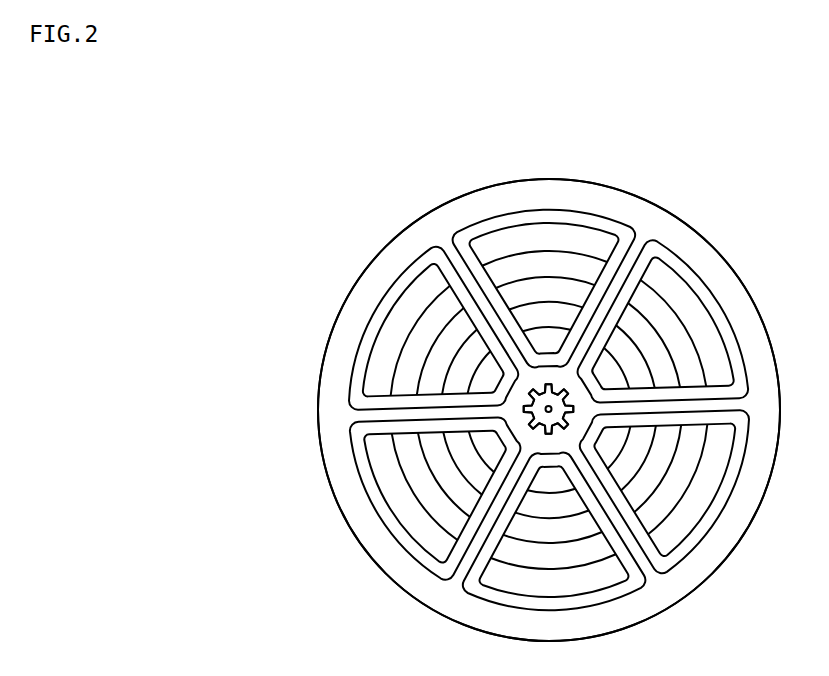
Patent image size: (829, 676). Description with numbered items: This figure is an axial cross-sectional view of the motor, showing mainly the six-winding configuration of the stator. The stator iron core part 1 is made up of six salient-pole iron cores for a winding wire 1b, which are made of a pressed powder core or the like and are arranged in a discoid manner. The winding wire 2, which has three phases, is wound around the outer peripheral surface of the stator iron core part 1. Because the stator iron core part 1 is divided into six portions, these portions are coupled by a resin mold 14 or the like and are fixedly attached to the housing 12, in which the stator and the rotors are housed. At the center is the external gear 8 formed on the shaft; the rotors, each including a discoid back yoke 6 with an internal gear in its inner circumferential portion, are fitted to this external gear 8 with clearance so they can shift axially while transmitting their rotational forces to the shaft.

The stator iron core part 1 is at (305, 118).
The salient-pole iron core for a winding wire 1b is at (428, 282).
The winding wire 2 is at (563, 215).
The back yoke 6 is at (520, 393).
The external gear 8 is at (560, 400).
The housing 12 is at (495, 191).
The resin mold 14 is at (665, 225).